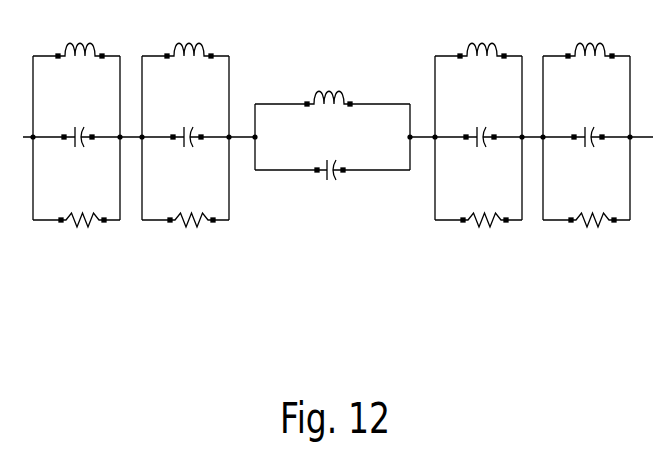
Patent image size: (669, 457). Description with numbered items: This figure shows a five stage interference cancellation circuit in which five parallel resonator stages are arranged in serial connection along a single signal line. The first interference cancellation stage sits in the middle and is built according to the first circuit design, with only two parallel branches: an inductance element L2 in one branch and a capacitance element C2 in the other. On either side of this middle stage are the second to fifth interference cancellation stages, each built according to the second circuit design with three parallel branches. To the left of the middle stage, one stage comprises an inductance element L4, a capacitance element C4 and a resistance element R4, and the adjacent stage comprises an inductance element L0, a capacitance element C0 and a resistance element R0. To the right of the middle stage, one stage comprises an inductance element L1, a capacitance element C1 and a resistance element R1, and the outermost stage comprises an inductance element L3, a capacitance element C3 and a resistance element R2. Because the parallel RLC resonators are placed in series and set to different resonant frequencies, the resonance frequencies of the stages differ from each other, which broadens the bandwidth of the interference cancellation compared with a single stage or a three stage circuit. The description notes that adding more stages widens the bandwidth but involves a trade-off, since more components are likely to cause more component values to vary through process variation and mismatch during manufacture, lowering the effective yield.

The inductor L4 is at (76, 37).
The capacitor C4 is at (76, 122).
The resistor R4 is at (76, 205).
The inductor L0 is at (185, 37).
The capacitor C0 is at (185, 122).
The resistor R0 is at (185, 205).
The inductor L2 is at (332, 86).
The capacitor C2 is at (332, 157).
The inductor L1 is at (478, 37).
The capacitor C1 is at (478, 122).
The resistor R1 is at (478, 205).
The inductor L3 is at (586, 37).
The capacitor C3 is at (586, 122).
The resistor R2 is at (586, 205).